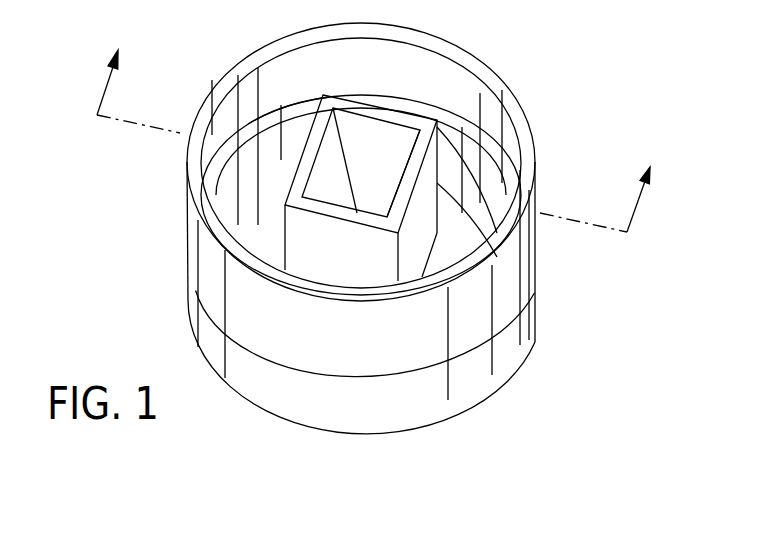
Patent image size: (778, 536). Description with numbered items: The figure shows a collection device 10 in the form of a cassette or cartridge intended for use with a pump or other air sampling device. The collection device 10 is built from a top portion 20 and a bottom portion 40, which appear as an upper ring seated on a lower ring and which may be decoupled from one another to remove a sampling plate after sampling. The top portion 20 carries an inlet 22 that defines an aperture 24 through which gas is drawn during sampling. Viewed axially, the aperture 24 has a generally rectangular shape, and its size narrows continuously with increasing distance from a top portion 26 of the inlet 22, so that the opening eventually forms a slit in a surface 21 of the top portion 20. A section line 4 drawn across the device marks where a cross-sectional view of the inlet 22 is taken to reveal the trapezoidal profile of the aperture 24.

The collection device 10 is at (369, 264).
The top portion 20 is at (507, 250).
The bottom portion 40 is at (473, 375).
The surface 21 is at (270, 220).
The inlet 22 is at (430, 177).
The aperture 24 is at (383, 150).
The top portion of inlet 26 is at (312, 147).
The section line 4- 4 is at (379, 127).